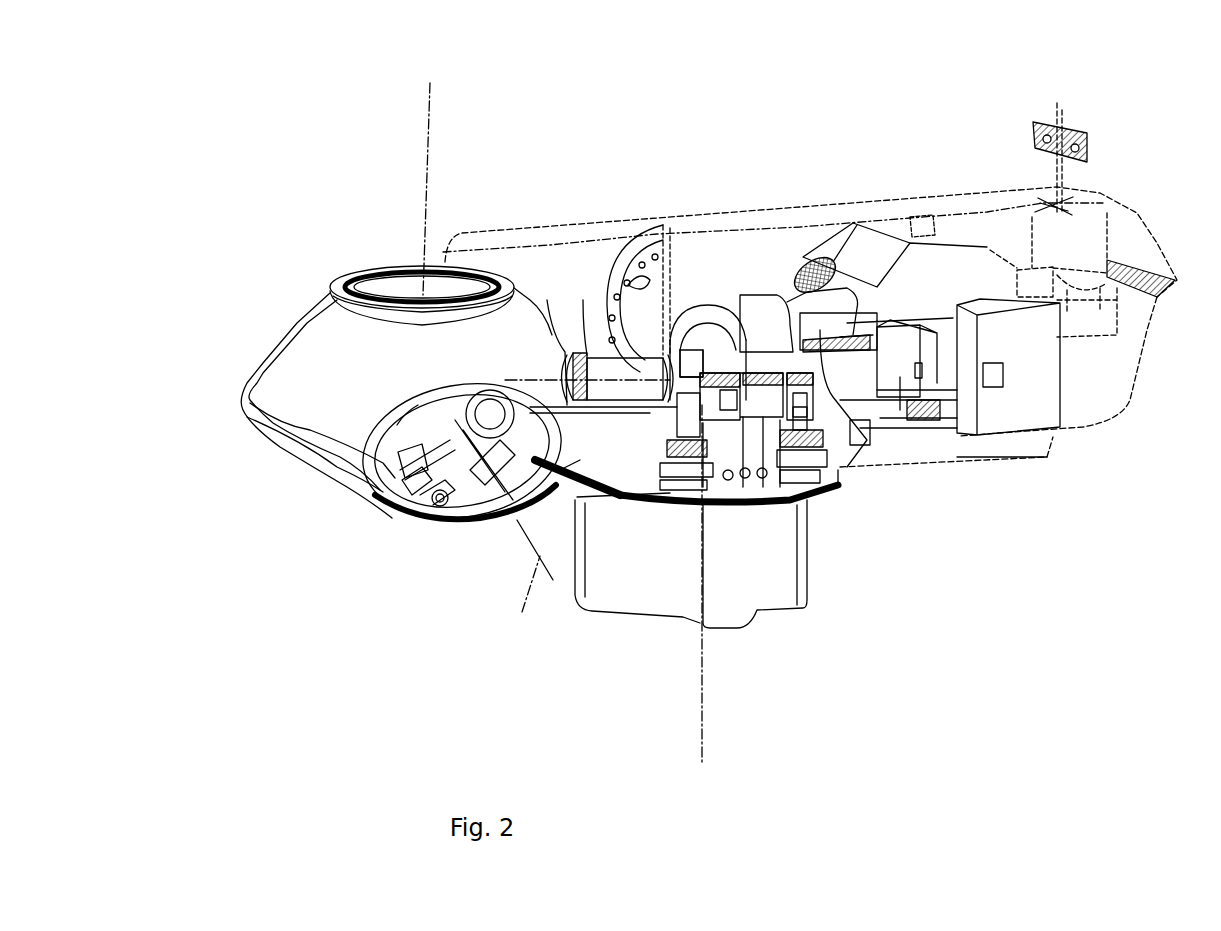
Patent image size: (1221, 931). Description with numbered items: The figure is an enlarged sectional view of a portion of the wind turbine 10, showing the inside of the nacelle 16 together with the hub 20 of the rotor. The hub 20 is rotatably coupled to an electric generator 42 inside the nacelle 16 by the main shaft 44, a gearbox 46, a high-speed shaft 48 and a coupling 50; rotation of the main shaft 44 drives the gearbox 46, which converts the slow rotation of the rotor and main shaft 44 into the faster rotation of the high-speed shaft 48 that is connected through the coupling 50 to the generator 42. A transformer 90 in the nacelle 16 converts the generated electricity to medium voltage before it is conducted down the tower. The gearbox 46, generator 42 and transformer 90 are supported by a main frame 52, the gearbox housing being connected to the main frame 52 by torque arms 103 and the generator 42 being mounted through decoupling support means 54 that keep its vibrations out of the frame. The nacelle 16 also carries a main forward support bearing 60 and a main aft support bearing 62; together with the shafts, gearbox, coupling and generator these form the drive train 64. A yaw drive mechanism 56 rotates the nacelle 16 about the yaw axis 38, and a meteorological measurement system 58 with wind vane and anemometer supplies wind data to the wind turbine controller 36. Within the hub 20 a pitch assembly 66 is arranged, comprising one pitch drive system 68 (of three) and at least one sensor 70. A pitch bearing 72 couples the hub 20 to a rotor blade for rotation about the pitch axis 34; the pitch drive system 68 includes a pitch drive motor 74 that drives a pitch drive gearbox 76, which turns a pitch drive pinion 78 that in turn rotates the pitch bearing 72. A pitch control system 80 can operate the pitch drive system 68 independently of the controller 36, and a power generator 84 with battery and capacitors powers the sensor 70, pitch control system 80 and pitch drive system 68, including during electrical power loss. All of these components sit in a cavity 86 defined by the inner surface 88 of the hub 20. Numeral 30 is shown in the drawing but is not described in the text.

The wind turbine 10 is at (260, 150).
The nacelle 16 is at (806, 110).
The hub 20 is at (228, 389).
The drive shaft 30 is at (600, 352).
The pitch axis 34 is at (440, 109).
The wind turbine controller 36 is at (1002, 328).
The yaw axis 38 is at (700, 675).
The electric generator 42 is at (907, 410).
The main shaft 44 is at (584, 353).
The gearbox 46 is at (733, 305).
The high-speed shaft 48 is at (855, 470).
The coupling 50 is at (860, 318).
The main frame 52 is at (818, 463).
The decoupling support means 54 is at (867, 443).
The yaw drive mechanism 56 is at (684, 480).
The meteorological measurement system 58 is at (1090, 142).
The main forward support bearing 60 is at (583, 417).
The main aft support bearing 62 is at (687, 320).
The drive train 64 is at (628, 296).
The pitch assembly 66 is at (410, 379).
The pitch drive system 68 is at (378, 474).
The sensor 70 is at (578, 480).
The pitch bearing 72 is at (413, 498).
The pitch drive motor 74 is at (397, 422).
The pitch drive gearbox 76 is at (448, 442).
The pitch drive pinion 78 is at (428, 505).
The pitch control system 80 is at (471, 512).
The power generator 84 is at (530, 540).
The cavity 86 is at (458, 515).
The inner surface 88 is at (491, 390).
The transformer 90 is at (383, 447).
The torque arm 103 is at (747, 485).